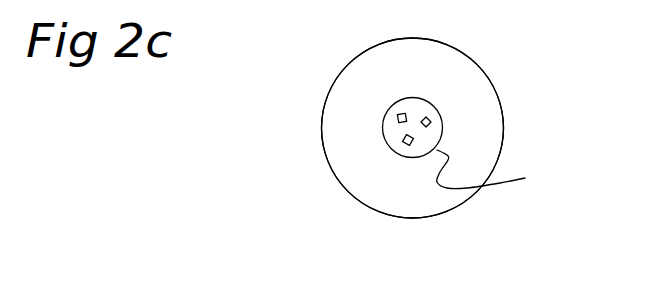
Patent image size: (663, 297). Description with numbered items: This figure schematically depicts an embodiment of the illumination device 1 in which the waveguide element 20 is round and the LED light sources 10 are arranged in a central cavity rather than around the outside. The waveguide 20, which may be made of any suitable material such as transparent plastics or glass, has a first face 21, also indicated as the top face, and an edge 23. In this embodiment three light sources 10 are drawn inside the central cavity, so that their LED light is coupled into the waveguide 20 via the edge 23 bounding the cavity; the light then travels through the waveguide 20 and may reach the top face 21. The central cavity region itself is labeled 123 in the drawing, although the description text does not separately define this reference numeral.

The illumination device 1 is at (393, 137).
The light source 10 is at (403, 112).
The waveguide element 20 is at (333, 186).
The first face 21 is at (382, 67).
The edge 23 is at (502, 153).
The central region 123 is at (407, 152).